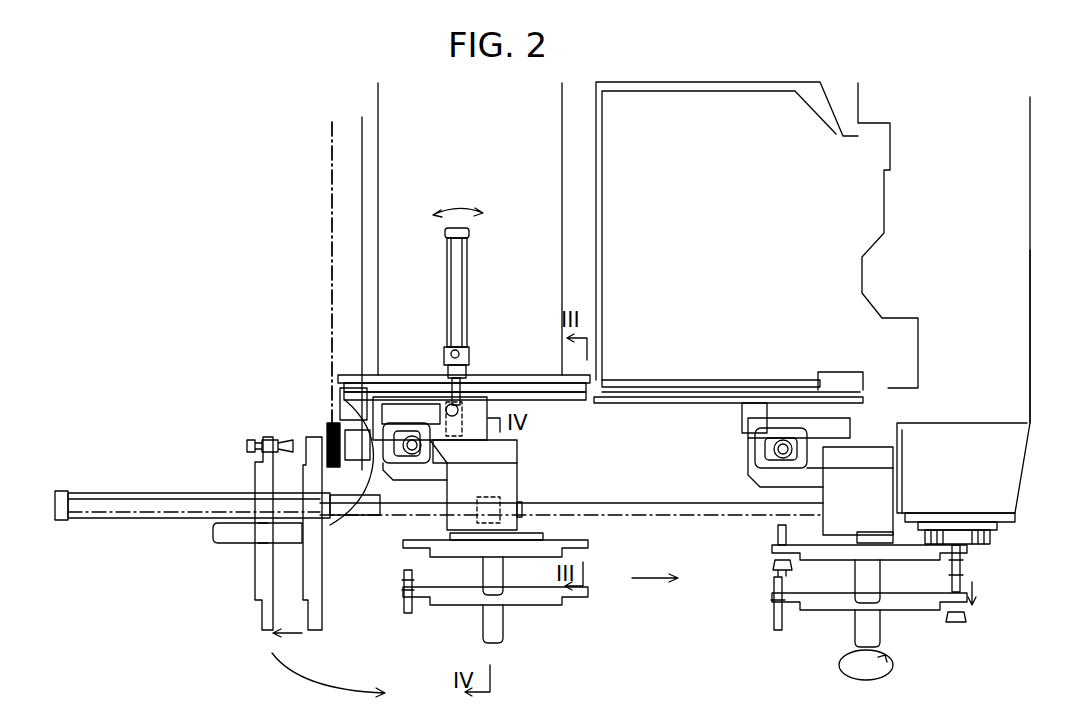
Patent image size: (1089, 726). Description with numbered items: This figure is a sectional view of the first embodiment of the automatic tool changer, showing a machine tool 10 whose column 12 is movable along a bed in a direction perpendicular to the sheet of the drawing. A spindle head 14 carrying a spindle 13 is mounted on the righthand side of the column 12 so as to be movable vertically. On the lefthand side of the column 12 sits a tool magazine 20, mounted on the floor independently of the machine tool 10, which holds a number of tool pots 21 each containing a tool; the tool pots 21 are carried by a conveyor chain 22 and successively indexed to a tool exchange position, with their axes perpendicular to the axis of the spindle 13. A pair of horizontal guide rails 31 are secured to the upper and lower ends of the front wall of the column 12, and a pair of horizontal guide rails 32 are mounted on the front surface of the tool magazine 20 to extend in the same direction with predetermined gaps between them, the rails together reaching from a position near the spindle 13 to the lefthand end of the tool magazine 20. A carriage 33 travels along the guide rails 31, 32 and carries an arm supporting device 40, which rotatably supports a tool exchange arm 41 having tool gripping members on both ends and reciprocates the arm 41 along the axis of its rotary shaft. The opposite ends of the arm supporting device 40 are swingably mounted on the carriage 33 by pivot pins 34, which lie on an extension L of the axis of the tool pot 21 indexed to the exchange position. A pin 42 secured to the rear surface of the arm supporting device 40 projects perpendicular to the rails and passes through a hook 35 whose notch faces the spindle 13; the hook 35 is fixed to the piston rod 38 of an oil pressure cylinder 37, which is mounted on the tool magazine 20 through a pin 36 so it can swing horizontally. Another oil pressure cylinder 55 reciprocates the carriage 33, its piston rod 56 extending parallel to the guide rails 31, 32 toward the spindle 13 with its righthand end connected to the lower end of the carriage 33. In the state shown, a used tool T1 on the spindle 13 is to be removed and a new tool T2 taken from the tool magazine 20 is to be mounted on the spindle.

The machine tool 10 is at (1041, 194).
The column 12 is at (738, 98).
The spindle 13 is at (992, 541).
The spindle head 14 is at (1014, 237).
The tool magazine 20 is at (344, 262).
The tool pot 21 is at (320, 440).
The conveyor chain 22 is at (330, 357).
The horizontal guide rails 31 is at (685, 403).
The horizontal guide rails 32 is at (552, 402).
The carriage 33 is at (395, 480).
The pivot pins 34 is at (440, 460).
The hook 35 is at (445, 415).
The pin 36 is at (465, 352).
The oil pressure cylinder 37 is at (467, 270).
The piston rod 38 is at (445, 415).
The arm supporting device 40 is at (510, 482).
The tool exchange arm 41 is at (262, 608).
The pin 42 is at (462, 402).
The oil pressure cylinder 55 is at (343, 525).
The piston rod 56 is at (515, 507).
The extension of the axis of a tool pot L is at (346, 404).
The used tool T1 is at (965, 575).
The new tool T2 is at (292, 442).